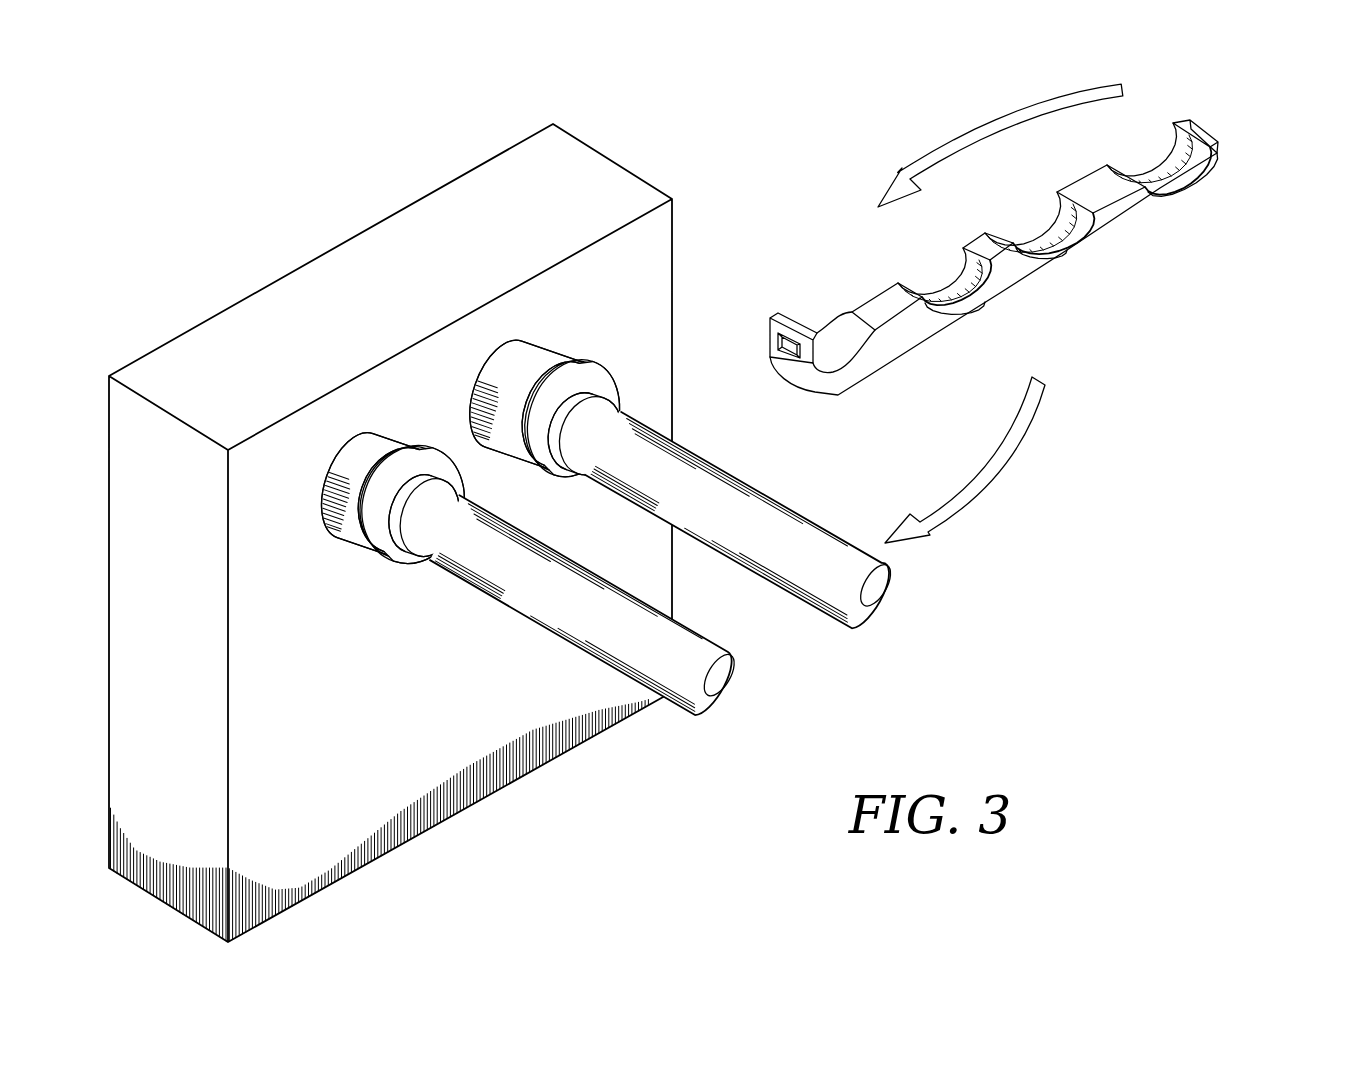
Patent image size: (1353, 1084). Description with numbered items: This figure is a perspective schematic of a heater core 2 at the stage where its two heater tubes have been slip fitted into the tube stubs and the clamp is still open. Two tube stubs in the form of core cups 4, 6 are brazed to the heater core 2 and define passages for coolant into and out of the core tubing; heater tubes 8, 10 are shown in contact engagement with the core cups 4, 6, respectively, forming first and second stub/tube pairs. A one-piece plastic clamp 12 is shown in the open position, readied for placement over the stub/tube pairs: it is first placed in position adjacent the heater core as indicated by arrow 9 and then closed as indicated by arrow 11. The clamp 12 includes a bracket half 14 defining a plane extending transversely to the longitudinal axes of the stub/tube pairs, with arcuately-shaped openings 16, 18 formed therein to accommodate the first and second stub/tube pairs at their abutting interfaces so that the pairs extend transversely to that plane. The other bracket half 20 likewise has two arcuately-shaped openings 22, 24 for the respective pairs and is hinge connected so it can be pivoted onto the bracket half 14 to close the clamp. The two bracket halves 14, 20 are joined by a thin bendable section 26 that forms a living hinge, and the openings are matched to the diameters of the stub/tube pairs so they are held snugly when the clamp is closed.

The heater core 2 is at (222, 313).
The core cup 4 is at (390, 565).
The core cup 6 is at (575, 358).
The heater tube 8 is at (560, 632).
The heater tube 10 is at (721, 464).
The clamp 12 is at (1043, 306).
The bracket half 14 is at (945, 333).
The arcuately-shaped opening 16 is at (860, 372).
The arcuately-shaped opening 18 is at (990, 302).
The bracket half 20 is at (1148, 213).
The arcuately-shaped opening 22 is at (1065, 250).
The arcuately-shaped opening 24 is at (1214, 180).
The thin section 26 is at (985, 237).
The arrow 11 is at (955, 142).
The arrow 9 is at (995, 466).